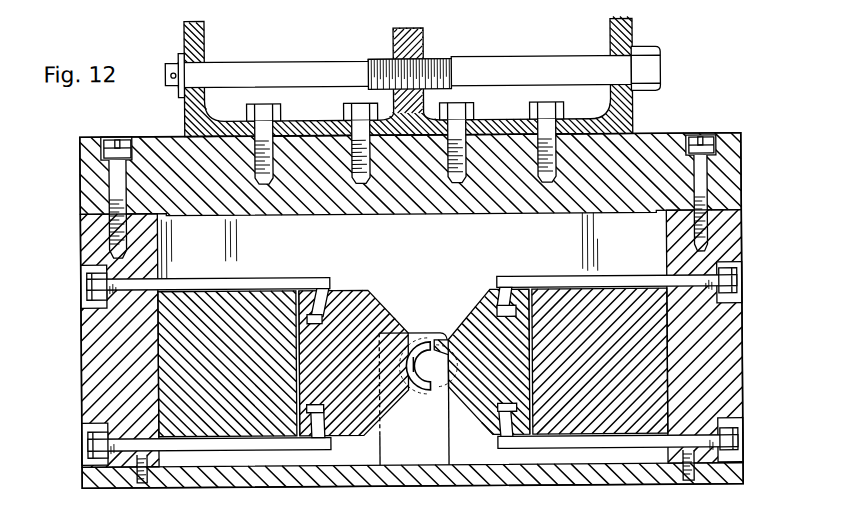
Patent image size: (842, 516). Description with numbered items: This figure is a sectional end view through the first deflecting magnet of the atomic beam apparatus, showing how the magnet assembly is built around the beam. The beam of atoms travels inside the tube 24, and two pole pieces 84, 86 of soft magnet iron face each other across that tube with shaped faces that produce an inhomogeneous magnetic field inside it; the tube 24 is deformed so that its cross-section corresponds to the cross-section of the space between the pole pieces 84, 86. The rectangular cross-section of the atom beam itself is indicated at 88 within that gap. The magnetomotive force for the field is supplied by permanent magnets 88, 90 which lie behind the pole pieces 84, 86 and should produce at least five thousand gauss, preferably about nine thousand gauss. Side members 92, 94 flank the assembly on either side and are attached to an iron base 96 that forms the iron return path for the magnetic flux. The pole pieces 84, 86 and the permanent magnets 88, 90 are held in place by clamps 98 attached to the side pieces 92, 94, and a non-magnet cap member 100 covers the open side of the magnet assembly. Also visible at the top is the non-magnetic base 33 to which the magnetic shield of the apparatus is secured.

The tube 24 is at (423, 390).
The non-magnetic base 33 is at (186, 112).
The pole piece 84 is at (372, 312).
The pole piece 86 is at (478, 315).
The permanent magnet 88 is at (243, 306).
The permanent magnet 90 is at (575, 303).
The side member 92 is at (83, 353).
The side member 94 is at (742, 365).
The iron base 96 is at (652, 150).
The clamp 98 is at (535, 283).
The non-magnet cap member 100 is at (408, 475).